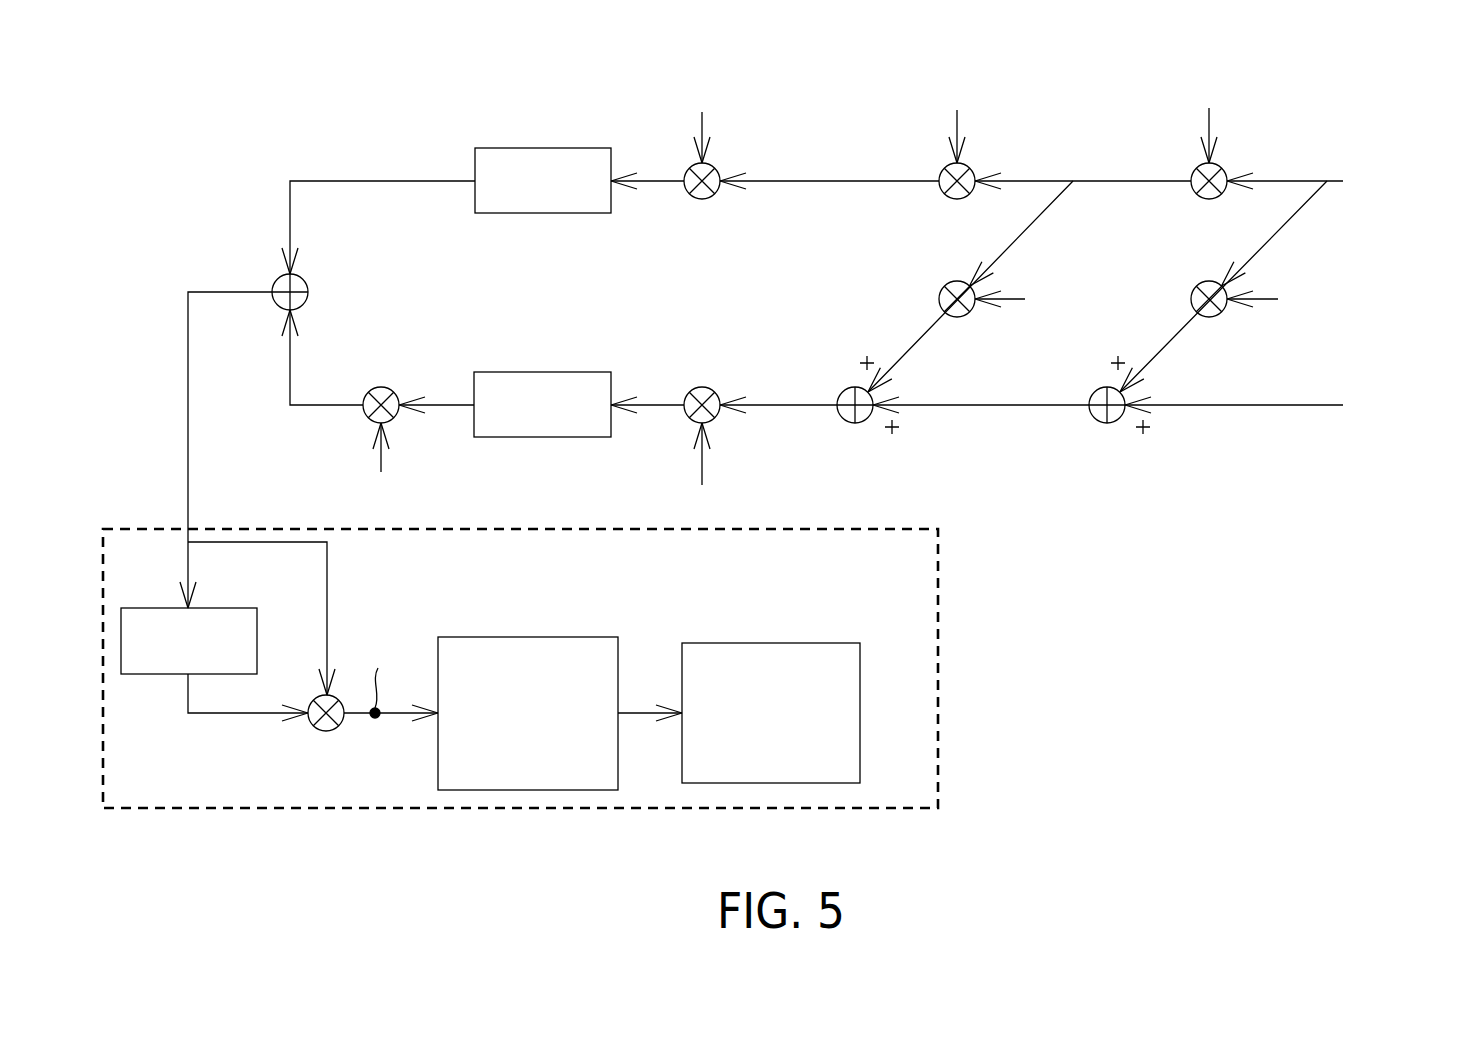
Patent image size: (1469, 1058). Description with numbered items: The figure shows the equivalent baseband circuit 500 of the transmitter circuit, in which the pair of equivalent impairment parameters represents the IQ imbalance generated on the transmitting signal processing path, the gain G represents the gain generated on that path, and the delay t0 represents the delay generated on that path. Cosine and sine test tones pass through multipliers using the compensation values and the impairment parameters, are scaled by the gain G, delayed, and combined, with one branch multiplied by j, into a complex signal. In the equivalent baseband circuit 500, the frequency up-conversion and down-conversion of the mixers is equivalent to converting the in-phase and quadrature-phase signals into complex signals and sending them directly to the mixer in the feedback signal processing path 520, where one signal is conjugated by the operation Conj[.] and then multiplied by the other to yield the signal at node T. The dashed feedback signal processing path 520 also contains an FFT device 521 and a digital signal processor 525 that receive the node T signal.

The equivalent baseband circuit 500 is at (259, 106).
The feedback signal processing path 520 is at (938, 661).
The FFT device 521 is at (497, 637).
The digital signal processor 525 is at (800, 643).